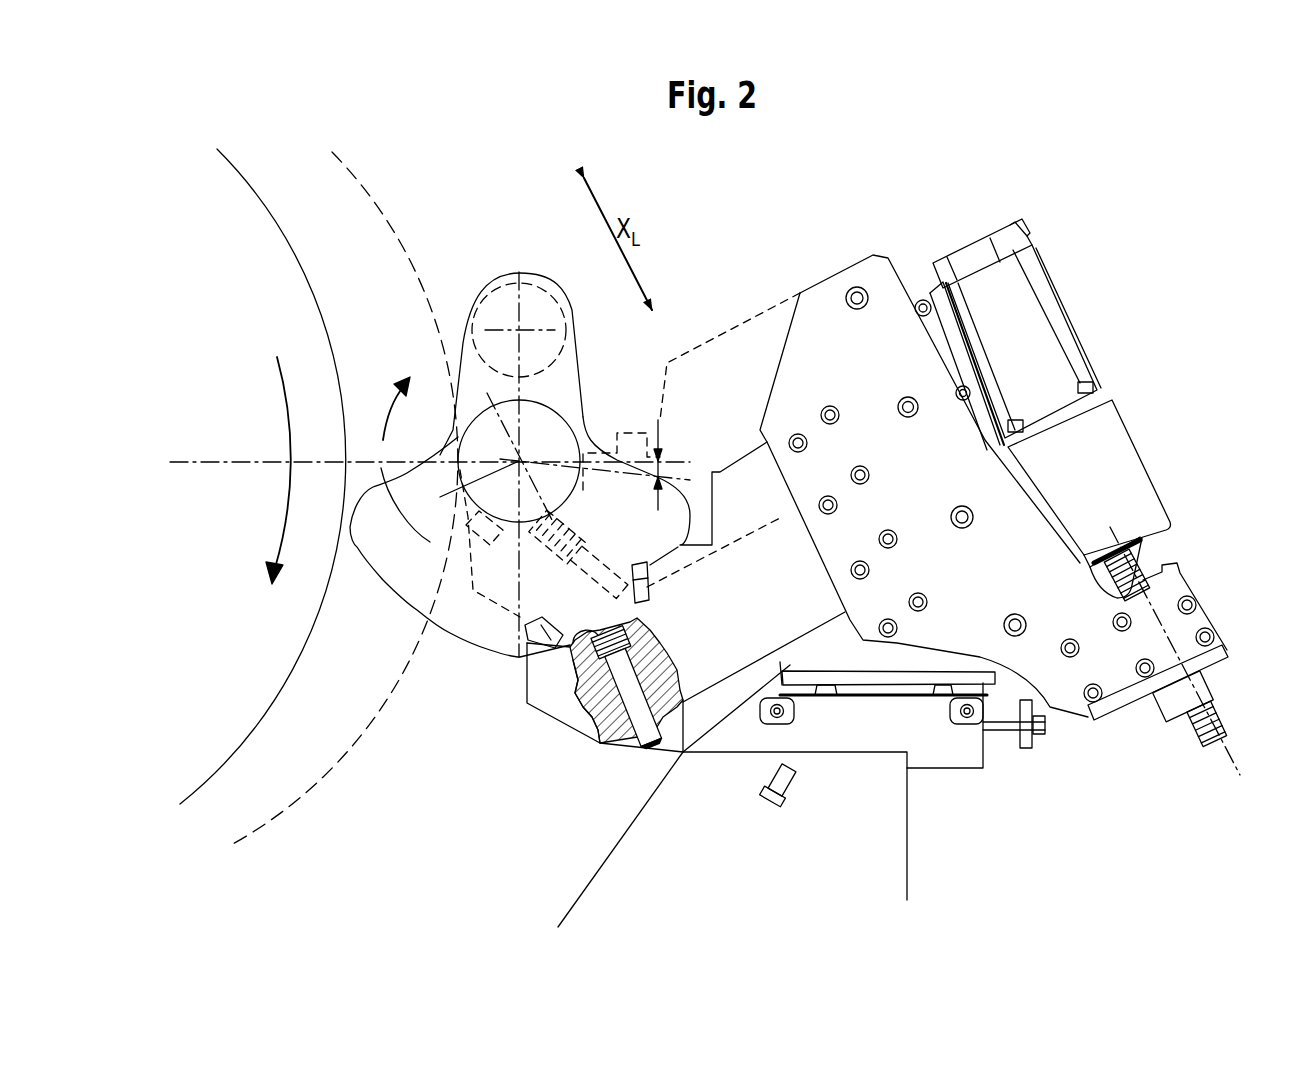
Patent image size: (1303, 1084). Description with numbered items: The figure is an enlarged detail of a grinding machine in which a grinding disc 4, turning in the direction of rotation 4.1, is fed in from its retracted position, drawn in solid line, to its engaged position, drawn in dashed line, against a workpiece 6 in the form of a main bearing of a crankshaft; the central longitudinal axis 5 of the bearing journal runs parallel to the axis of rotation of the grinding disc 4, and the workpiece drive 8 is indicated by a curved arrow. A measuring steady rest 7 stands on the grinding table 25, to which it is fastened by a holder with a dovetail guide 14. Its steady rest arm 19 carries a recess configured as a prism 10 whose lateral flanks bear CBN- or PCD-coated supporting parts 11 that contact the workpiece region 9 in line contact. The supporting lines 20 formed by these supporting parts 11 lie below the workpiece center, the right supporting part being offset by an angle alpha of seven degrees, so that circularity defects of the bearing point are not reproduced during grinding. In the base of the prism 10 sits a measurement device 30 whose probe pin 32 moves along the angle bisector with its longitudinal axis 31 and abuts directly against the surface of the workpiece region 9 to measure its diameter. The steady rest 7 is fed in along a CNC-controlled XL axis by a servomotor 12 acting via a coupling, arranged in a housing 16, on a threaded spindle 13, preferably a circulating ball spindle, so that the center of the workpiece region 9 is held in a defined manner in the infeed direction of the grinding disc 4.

The grinding disc 4 is at (277, 222).
The direction of rotation 4.1 is at (290, 437).
The central longitudinal axis 5 is at (522, 459).
The workpiece 6 is at (562, 452).
The measuring steady rest 7 is at (825, 297).
The workpiece drive 8 is at (377, 433).
The workpiece region 9 is at (552, 397).
The prism 10 is at (638, 616).
The supporting parts 11 is at (560, 640).
The servomotor 12 is at (1043, 353).
The threaded spindle 13 is at (1153, 560).
The dovetail guide 14 is at (870, 697).
The actuator housing 16 is at (1113, 453).
The steady rest arm 19 is at (578, 718).
The supporting lines 20 is at (503, 487).
The grinding table 25 is at (897, 877).
The measurement device 30 is at (683, 680).
The longitudinal axis 31 is at (640, 750).
The probe pin 32 is at (583, 707).